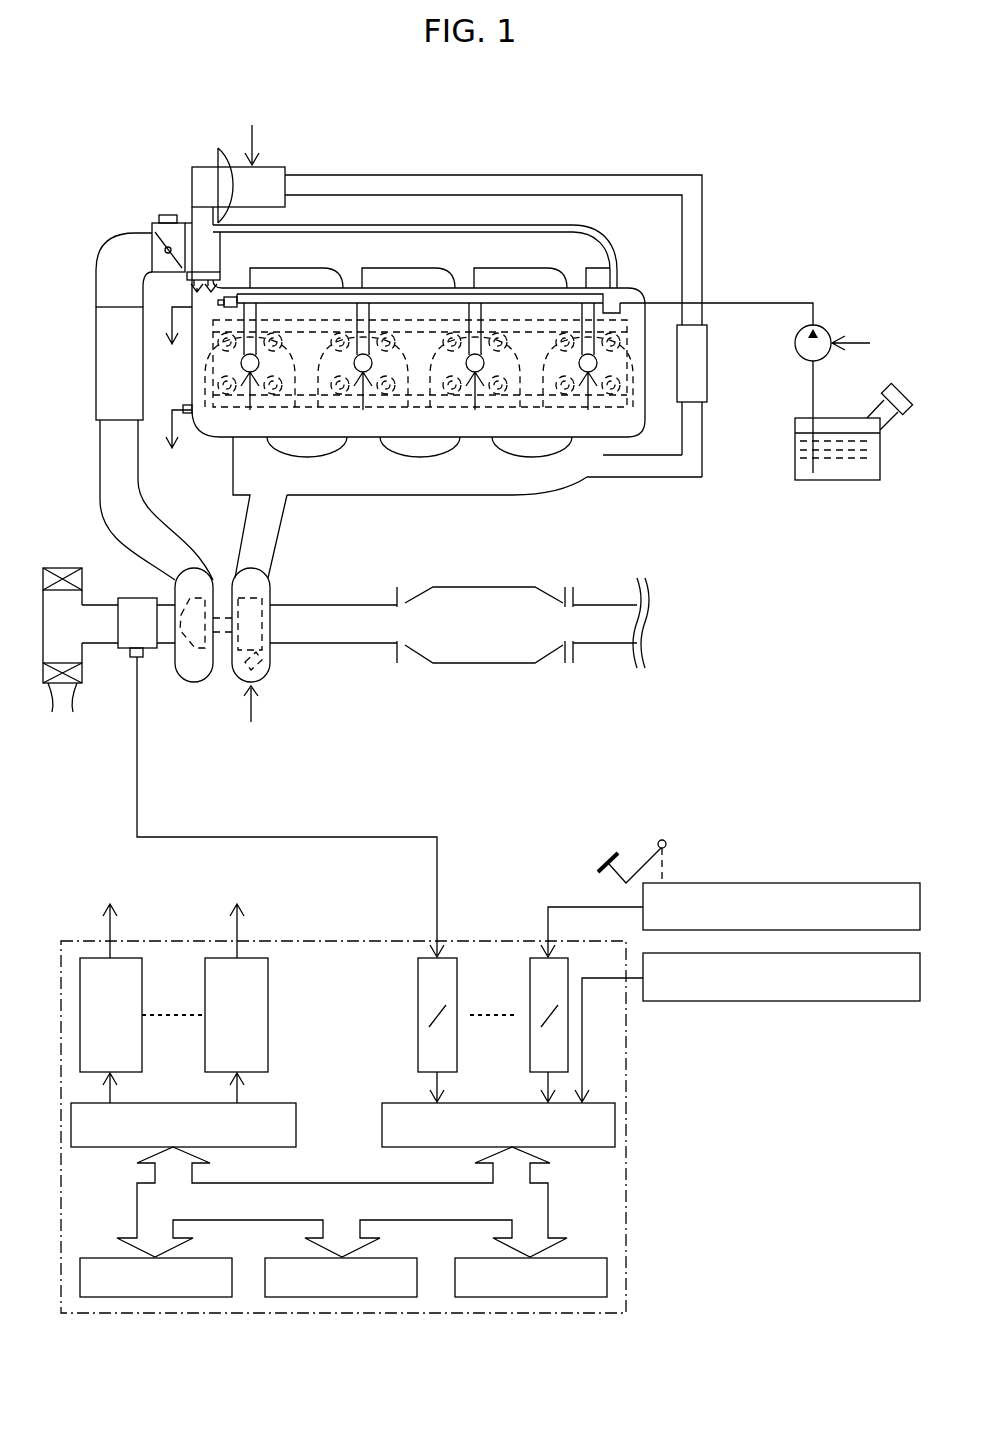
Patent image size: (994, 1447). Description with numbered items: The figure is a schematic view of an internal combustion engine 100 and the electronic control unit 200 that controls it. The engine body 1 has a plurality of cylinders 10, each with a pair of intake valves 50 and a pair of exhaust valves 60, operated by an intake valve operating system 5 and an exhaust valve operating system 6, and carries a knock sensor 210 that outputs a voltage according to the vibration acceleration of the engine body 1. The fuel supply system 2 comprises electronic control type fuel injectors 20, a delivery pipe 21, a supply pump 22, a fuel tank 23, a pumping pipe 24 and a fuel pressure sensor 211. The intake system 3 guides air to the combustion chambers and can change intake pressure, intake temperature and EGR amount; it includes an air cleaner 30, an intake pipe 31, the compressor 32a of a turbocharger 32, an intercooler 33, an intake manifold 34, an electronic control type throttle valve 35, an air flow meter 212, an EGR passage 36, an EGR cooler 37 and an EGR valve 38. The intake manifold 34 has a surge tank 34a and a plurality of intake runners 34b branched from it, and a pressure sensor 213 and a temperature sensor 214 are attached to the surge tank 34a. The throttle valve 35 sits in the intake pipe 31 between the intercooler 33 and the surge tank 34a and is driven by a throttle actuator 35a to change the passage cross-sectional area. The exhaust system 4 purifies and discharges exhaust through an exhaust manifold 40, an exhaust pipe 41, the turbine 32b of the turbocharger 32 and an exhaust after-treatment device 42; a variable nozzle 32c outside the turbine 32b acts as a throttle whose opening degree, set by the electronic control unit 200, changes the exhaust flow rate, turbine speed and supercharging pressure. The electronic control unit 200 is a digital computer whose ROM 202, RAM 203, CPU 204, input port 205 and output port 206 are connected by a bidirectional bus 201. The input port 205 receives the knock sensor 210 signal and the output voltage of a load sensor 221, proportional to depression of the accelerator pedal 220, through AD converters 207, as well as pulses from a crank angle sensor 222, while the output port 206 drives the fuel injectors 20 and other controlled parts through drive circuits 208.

The internal combustion engine 100 is at (742, 203).
The engine body 1 is at (633, 290).
The fuel supply system 2 is at (785, 288).
The intake system 3 is at (52, 292).
The exhaust system 4 is at (537, 522).
The intake valve operating system 5 is at (627, 328).
The exhaust valve operating system 6 is at (617, 405).
The cylinder 10 is at (640, 405).
The fuel injector 20 is at (578, 368).
The delivery pipe 21 is at (583, 290).
The supply pump 22 is at (826, 327).
The fuel tank 23 is at (833, 482).
The pumping pipe 24 is at (730, 303).
The air cleaner 30 is at (82, 672).
The intake pipe 31 is at (97, 600).
The turbocharger 32 is at (198, 752).
The compressor 32a is at (205, 683).
The turbine 32b is at (265, 683).
The variable nozzle 32c is at (252, 567).
The intercooler 33 is at (95, 378).
The intake manifold 34 is at (484, 118).
The surge tank 34a is at (243, 228).
The intake runner 34b is at (457, 228).
The throttle valve 35 is at (170, 220).
The throttle actuator 35a is at (153, 226).
The EGR passage 36 is at (523, 175).
The EGR cooler 37 is at (707, 367).
The EGR valve 38 is at (270, 163).
The exhaust manifold 40 is at (398, 497).
The exhaust pipe 41 is at (280, 543).
The exhaust after-treatment device 42 is at (487, 663).
The intake valve 50 is at (303, 400).
The exhaust valve 60 is at (323, 400).
The electronic control unit 200 is at (295, 940).
The bidirectional bus 201 is at (560, 1208).
The ROM 202 is at (170, 1297).
The RAM 203 is at (340, 1297).
The CPU 204 is at (538, 1297).
The input port 205 is at (393, 1102).
The output port 206 is at (283, 1102).
The AD converter 207 is at (528, 978).
The drive circuit 208 is at (207, 960).
The knock sensor 210 is at (188, 415).
The fuel pressure sensor 211 is at (233, 308).
The air flow meter 212 is at (137, 598).
The pressure sensor 213 is at (195, 283).
The temperature sensor 214 is at (216, 285).
The accelerator pedal 220 is at (638, 867).
The load sensor 221 is at (850, 883).
The crank angle sensor 222 is at (872, 1003).